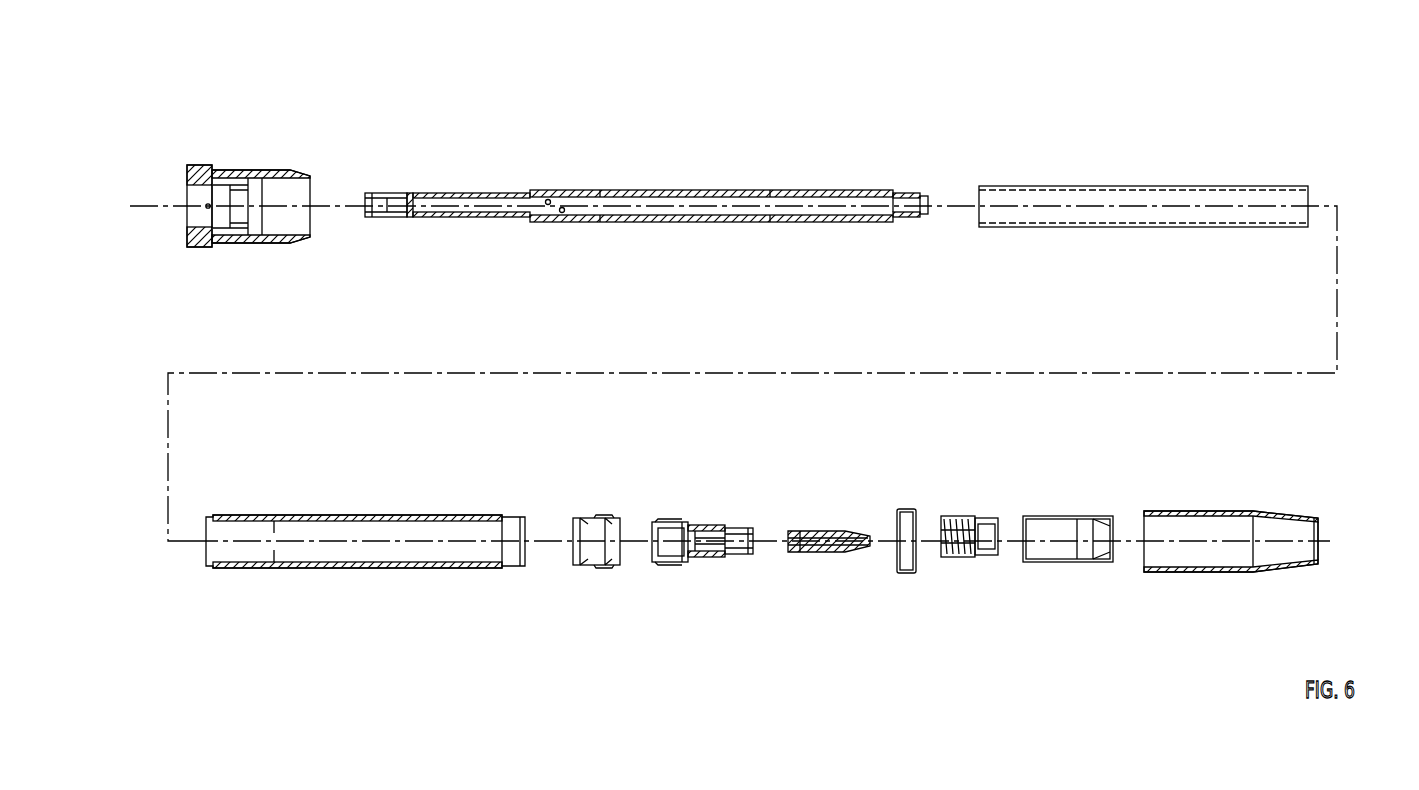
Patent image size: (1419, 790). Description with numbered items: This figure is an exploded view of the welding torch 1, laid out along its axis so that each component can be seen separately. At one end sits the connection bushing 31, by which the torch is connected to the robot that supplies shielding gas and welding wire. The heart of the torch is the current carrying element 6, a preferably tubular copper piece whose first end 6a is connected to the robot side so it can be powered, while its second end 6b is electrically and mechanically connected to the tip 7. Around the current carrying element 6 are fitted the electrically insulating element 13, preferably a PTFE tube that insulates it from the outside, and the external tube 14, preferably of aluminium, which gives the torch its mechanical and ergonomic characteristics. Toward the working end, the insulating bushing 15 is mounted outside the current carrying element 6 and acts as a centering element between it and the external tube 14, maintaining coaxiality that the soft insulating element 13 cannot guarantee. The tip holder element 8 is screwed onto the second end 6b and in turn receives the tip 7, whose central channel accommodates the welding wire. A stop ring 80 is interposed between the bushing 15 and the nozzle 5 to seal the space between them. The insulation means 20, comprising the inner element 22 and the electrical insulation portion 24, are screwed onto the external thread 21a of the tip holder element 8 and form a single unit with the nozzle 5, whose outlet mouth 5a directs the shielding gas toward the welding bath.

The torch 1 is at (1290, 105).
The connection bushing 31 is at (250, 170).
The current carrying element 6 is at (646, 126).
The first end 6a is at (524, 157).
The second end 6b is at (889, 167).
The electrically insulating element 13 is at (1052, 158).
The insulation means 20 is at (1135, 620).
The external tube 14 is at (211, 603).
The insulating bushing 15 is at (608, 487).
The tip holder element 8 is at (683, 543).
The external thread 21a is at (676, 517).
The tip 7 is at (810, 565).
The stop ring 80 is at (884, 592).
The inner element 22 is at (952, 593).
The electrical insulation portion 24 is at (1050, 593).
The nozzle 5 is at (1274, 510).
The outlet mouth 5a is at (1330, 532).